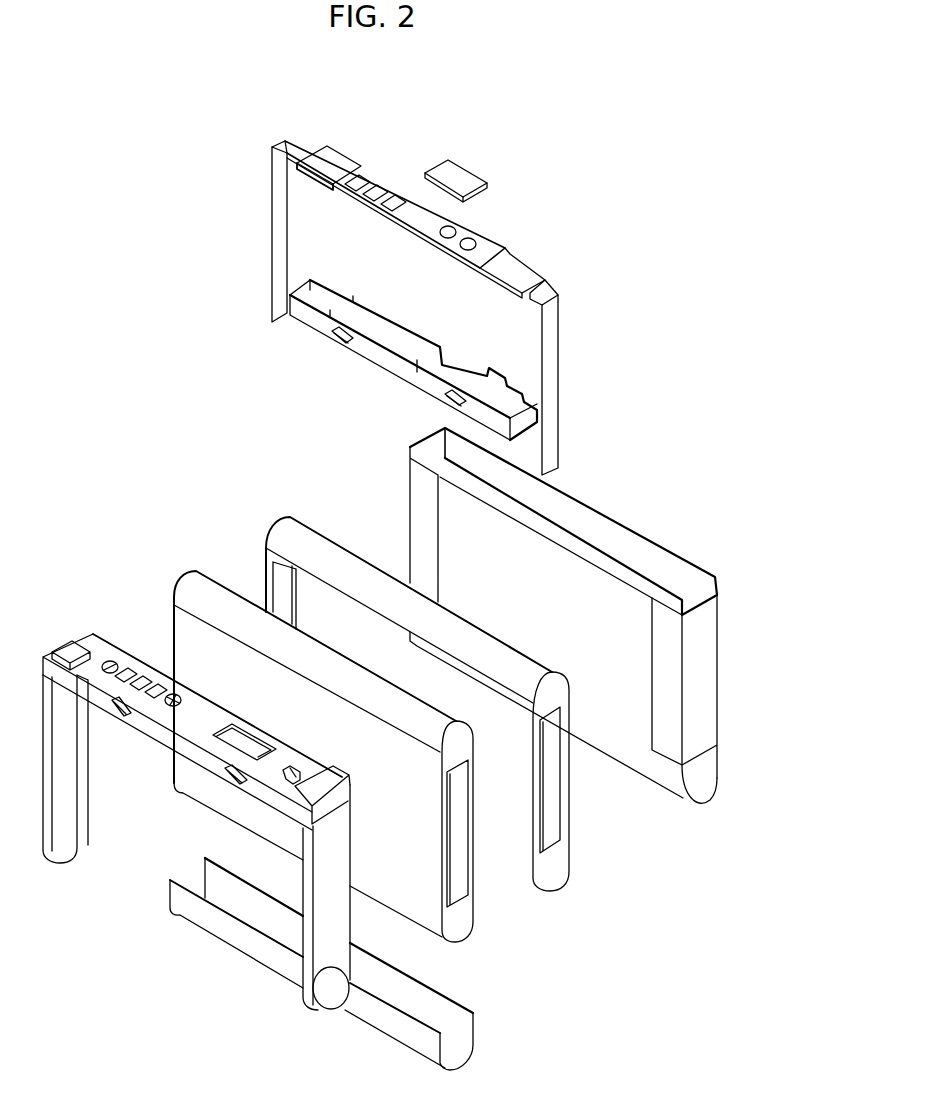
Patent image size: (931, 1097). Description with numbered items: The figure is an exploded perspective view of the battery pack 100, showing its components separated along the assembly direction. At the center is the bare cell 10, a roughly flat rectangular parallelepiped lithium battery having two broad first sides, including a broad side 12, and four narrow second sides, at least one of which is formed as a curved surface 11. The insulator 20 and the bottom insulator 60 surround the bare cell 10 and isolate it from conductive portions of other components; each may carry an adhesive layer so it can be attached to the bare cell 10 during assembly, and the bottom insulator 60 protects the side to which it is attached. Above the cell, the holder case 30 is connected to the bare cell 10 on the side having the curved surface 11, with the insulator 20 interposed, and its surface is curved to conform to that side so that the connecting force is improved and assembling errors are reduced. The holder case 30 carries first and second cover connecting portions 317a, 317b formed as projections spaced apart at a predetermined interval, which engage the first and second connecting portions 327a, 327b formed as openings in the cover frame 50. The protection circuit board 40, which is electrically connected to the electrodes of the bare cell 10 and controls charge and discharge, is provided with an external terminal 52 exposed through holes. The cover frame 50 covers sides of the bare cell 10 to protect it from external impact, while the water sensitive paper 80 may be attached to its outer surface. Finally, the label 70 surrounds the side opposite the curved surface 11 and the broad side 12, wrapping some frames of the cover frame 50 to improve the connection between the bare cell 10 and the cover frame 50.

The battery pack 100 is at (603, 119).
The bare cell 10 is at (167, 575).
The curved surface 11 is at (430, 717).
The broad side 12 is at (430, 893).
The insulator 20 is at (261, 523).
The holder case 30 is at (314, 337).
The first cover connecting portion 317a is at (339, 335).
The second cover connecting portion 317b is at (445, 405).
The protection circuit board 40 is at (536, 249).
The cover frame 50 is at (64, 631).
The external terminal 52 is at (380, 188).
The bottom insulator 60 is at (192, 932).
The label 70 is at (712, 806).
The water sensitive paper 80 is at (465, 163).
The first connecting portion 327a is at (121, 716).
The second connecting portion 327b is at (232, 781).